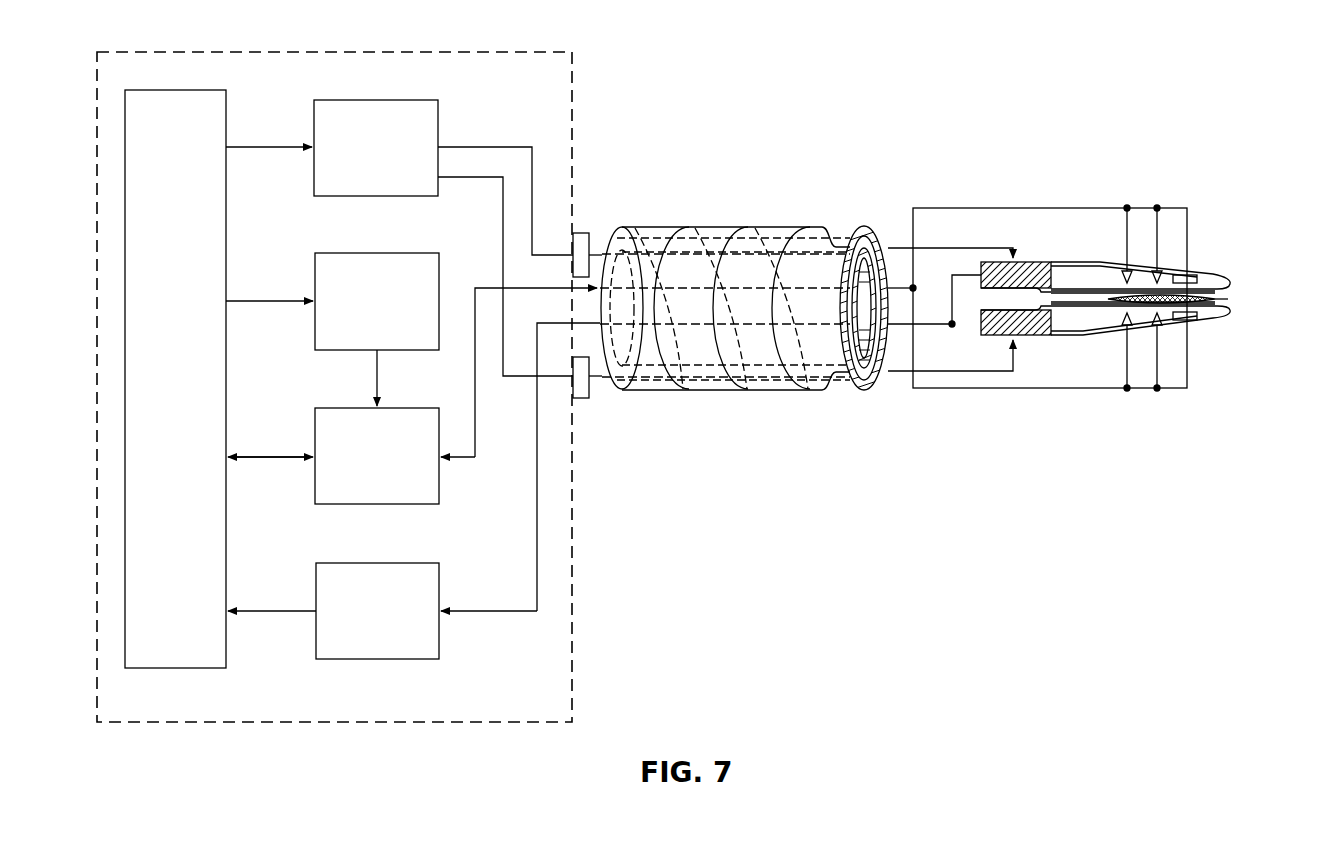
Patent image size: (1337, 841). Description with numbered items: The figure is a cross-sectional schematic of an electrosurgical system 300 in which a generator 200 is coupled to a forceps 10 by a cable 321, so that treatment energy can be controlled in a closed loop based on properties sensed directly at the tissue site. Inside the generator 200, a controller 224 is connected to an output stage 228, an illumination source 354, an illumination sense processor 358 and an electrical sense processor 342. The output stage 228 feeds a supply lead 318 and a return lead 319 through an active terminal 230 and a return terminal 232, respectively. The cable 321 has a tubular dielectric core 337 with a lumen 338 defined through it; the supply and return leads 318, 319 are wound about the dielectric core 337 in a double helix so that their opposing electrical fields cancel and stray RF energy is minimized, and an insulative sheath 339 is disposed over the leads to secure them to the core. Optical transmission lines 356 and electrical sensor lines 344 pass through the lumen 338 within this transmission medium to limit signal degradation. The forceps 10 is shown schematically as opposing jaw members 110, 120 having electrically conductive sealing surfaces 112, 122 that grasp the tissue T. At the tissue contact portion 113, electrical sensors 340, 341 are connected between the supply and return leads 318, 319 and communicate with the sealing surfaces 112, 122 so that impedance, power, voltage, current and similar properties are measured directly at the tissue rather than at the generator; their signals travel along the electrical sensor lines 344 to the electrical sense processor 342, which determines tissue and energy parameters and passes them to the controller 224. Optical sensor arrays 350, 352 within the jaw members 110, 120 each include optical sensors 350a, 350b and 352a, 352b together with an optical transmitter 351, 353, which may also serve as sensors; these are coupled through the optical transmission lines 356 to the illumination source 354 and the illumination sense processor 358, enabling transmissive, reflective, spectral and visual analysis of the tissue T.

The generator 200 is at (541, 52).
The controller 224 is at (177, 668).
The output stage 228 is at (360, 100).
The illumination source 354 is at (360, 253).
The illumination sense processor 358 is at (360, 408).
The electrical sense processor 342 is at (360, 563).
The active terminal 230 is at (582, 233).
The return terminal 232 is at (582, 398).
The system 300 is at (808, 92).
The electrical sensor lines 344 is at (690, 324).
The supply lead 318 is at (750, 390).
The return lead 319 is at (755, 240).
The optical transmission lines 356 is at (675, 287).
The cable 321 is at (828, 228).
The insulative sheath 339 is at (885, 230).
The lumen 338 is at (880, 365).
The dielectric core 337 is at (867, 338).
The forceps 10 is at (1247, 238).
The electrical sensor 340 is at (1032, 260).
The electrical sensor 341 is at (1032, 337).
The optical sensor array 350 is at (1166, 262).
The optical sensor 350a is at (1123, 270).
The optical sensor 350b is at (1155, 270).
The optical transmitter 351 is at (1194, 273).
The jaw member 110 is at (1208, 268).
The electrically conductive sealing surface 112 is at (1225, 289).
The tissue contact portion 113 is at (1090, 285).
The tissue T is at (1232, 296).
The optical sensor array 352 is at (1166, 340).
The optical sensor 352a is at (1123, 326).
The optical sensor 352b is at (1155, 346).
The optical transmitter 353 is at (1194, 322).
The jaw member 120 is at (1208, 326).
The electrically conductive sealing surface 122 is at (1225, 307).